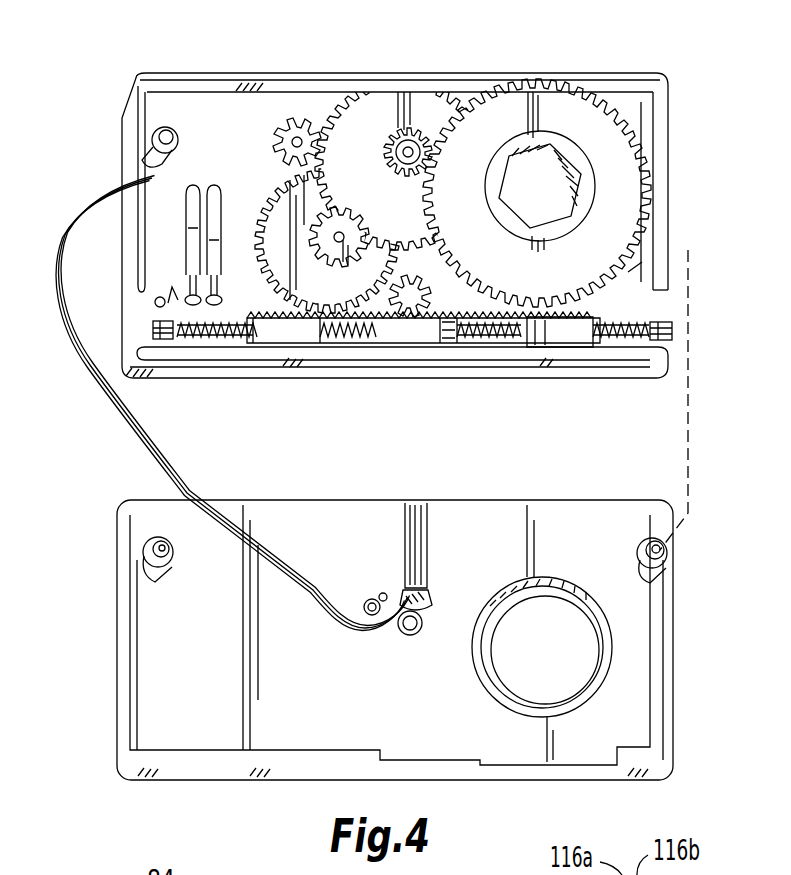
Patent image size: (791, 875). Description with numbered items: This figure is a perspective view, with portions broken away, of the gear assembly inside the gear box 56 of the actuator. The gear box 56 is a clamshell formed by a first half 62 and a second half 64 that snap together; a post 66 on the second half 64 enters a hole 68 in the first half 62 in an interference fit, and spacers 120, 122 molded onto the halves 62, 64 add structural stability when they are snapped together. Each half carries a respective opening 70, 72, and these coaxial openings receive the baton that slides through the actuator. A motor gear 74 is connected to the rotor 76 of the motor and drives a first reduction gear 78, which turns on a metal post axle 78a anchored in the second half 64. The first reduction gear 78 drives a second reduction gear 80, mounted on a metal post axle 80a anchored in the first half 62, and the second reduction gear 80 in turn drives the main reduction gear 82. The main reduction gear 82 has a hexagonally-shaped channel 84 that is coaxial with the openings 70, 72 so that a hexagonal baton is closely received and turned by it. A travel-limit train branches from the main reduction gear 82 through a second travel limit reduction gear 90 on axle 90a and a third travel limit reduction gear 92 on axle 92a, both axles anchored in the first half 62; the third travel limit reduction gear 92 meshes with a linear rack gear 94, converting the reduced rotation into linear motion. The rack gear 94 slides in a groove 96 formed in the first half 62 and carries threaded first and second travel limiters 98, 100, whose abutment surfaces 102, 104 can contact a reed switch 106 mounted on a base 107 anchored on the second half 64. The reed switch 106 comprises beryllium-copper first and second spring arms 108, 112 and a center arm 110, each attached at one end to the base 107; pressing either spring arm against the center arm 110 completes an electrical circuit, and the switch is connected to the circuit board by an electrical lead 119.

The gear box 56 is at (97, 387).
The first half 62 is at (124, 100).
The second half 64 is at (125, 620).
The post 66 is at (148, 550).
The hole 68 is at (157, 297).
The opening 70 is at (538, 187).
The opening 72 is at (575, 658).
The motor gear 74 is at (297, 135).
The rotor 76 is at (303, 136).
The first reduction gear 78 is at (287, 205).
The metal post axle 78a is at (374, 598).
The second reduction gear 80 is at (428, 100).
The metal post axle 80a is at (398, 165).
The main reduction gear 82 is at (560, 108).
The hexagonally-shaped channel 84 is at (580, 190).
The second travel limit reduction gear 90 is at (503, 337).
The metal post axle 90a is at (467, 327).
The third travel limit reduction gear 92 is at (352, 262).
The metal post axle 92a is at (410, 306).
The linear rack gear 94 is at (450, 320).
The groove 96 is at (178, 305).
The first travel limiter 98 is at (212, 332).
The second travel limiter 100 is at (632, 320).
The abutment surface 102 is at (153, 330).
The abutment surface 104 is at (673, 332).
The reed switch 106 is at (418, 547).
The base 107 is at (424, 592).
The first spring arm 108 is at (410, 502).
The center arm 110 is at (420, 502).
The second spring arm 112 is at (428, 515).
The electrical lead 119 is at (148, 443).
The spacer 120 is at (150, 148).
The spacer 122 is at (660, 582).